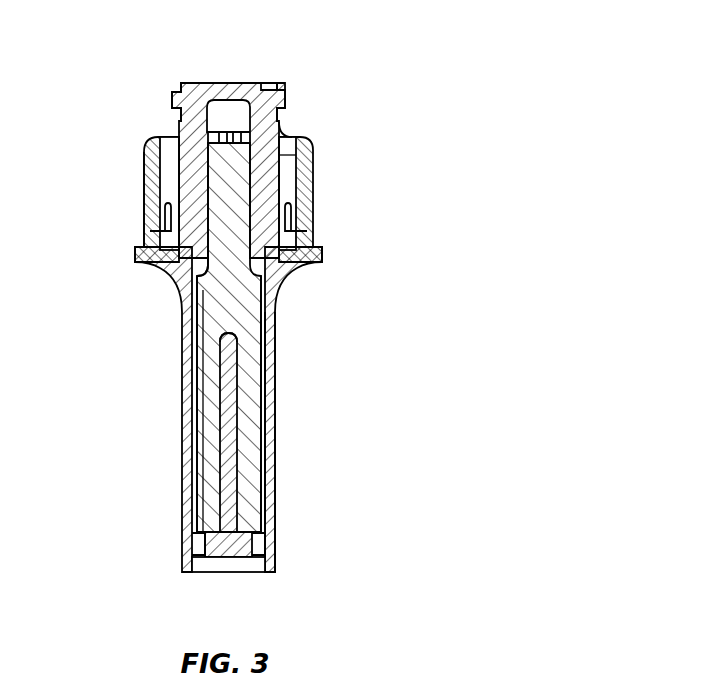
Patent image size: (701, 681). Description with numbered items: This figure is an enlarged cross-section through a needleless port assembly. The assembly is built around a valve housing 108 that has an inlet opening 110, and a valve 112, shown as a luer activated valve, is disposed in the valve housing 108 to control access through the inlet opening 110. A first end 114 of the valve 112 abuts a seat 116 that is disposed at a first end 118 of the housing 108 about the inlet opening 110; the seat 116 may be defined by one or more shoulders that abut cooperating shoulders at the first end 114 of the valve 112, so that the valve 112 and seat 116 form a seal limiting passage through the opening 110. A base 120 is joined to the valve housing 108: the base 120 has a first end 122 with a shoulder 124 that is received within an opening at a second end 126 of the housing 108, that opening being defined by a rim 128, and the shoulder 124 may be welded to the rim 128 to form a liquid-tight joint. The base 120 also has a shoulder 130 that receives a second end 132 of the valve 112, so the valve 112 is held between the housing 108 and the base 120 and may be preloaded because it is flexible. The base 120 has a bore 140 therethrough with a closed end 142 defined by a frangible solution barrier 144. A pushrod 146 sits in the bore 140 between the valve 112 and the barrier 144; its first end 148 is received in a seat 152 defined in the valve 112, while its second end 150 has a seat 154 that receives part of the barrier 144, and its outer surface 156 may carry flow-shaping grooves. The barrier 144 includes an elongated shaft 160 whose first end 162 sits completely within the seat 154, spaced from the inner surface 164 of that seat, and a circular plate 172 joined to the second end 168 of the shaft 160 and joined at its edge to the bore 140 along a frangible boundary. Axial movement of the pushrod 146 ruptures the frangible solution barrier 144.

The valve housing 108 is at (280, 208).
The inlet opening 110 is at (273, 80).
The valve 112 is at (275, 153).
The first end of the valve 114 is at (287, 128).
The seat 116 is at (170, 122).
The first end of the housing 118 is at (150, 146).
The base 120 is at (268, 416).
The first end of the base 122 is at (140, 262).
The shoulder of the base 124 is at (160, 225).
The second end of the housing 126 is at (150, 185).
The rim of the housing 128 is at (153, 203).
The shoulder 130 is at (314, 249).
The second end of the valve 132 is at (288, 262).
The bore 140 is at (266, 444).
The closed end 142 is at (279, 546).
The frangible solution barrier 144 is at (257, 560).
The pushrod 146 is at (252, 378).
The first end of the pushrod 148 is at (232, 180).
The second end of the pushrod 150 is at (262, 476).
The seat defined in the valve 152 is at (209, 83).
The seat in the second end of the pushrod 154 is at (218, 342).
The outer surface of the pushrod 156 is at (272, 512).
The elongated shaft 160 is at (200, 456).
The first end of the shaft 162 is at (214, 350).
The inner surface of the seat 164 is at (205, 318).
The second end of the shaft 168 is at (220, 530).
The circular plate 172 is at (227, 547).